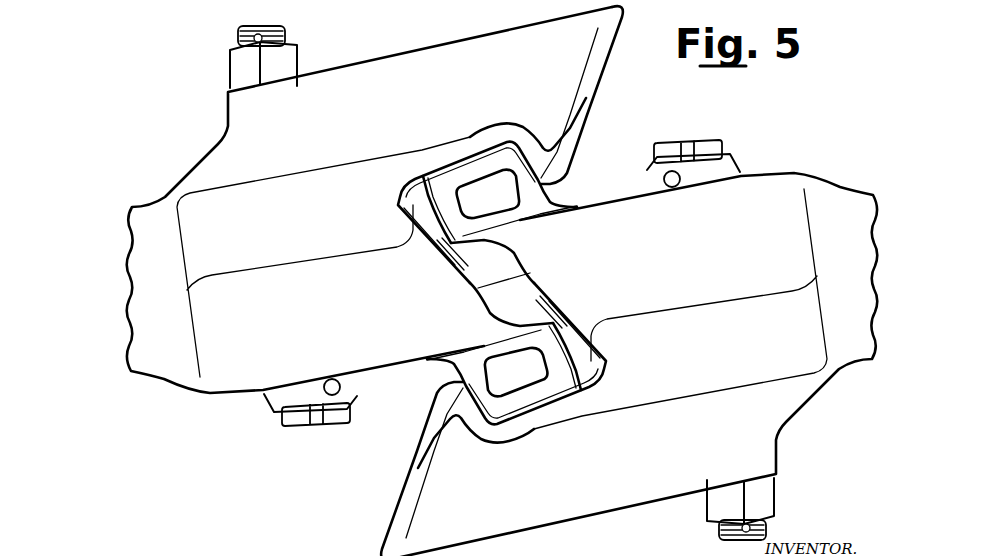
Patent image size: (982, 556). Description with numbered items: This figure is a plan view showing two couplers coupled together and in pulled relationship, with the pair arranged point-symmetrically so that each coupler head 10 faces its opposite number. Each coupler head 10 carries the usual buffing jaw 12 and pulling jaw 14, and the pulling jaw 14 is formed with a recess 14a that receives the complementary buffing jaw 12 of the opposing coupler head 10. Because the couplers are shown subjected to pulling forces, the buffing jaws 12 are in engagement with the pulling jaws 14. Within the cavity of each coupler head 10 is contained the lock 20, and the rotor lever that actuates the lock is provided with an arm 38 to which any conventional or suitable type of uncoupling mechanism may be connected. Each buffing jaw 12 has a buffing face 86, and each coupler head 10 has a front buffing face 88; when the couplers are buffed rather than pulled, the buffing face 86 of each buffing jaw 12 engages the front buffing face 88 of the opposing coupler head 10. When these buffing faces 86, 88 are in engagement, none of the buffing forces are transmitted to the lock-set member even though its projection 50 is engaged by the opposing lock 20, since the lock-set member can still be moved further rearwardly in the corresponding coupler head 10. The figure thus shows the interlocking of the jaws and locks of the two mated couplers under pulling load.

The coupler head 10 is at (210, 143).
The buffing jaw 12 is at (463, 168).
The pulling jaw 14 is at (580, 137).
The recess 14a is at (420, 178).
The lock 20 is at (503, 252).
The arm 38 is at (707, 143).
The projection 50 is at (540, 297).
The buffing face 86 is at (420, 220).
The front buffing face 88 is at (420, 198).